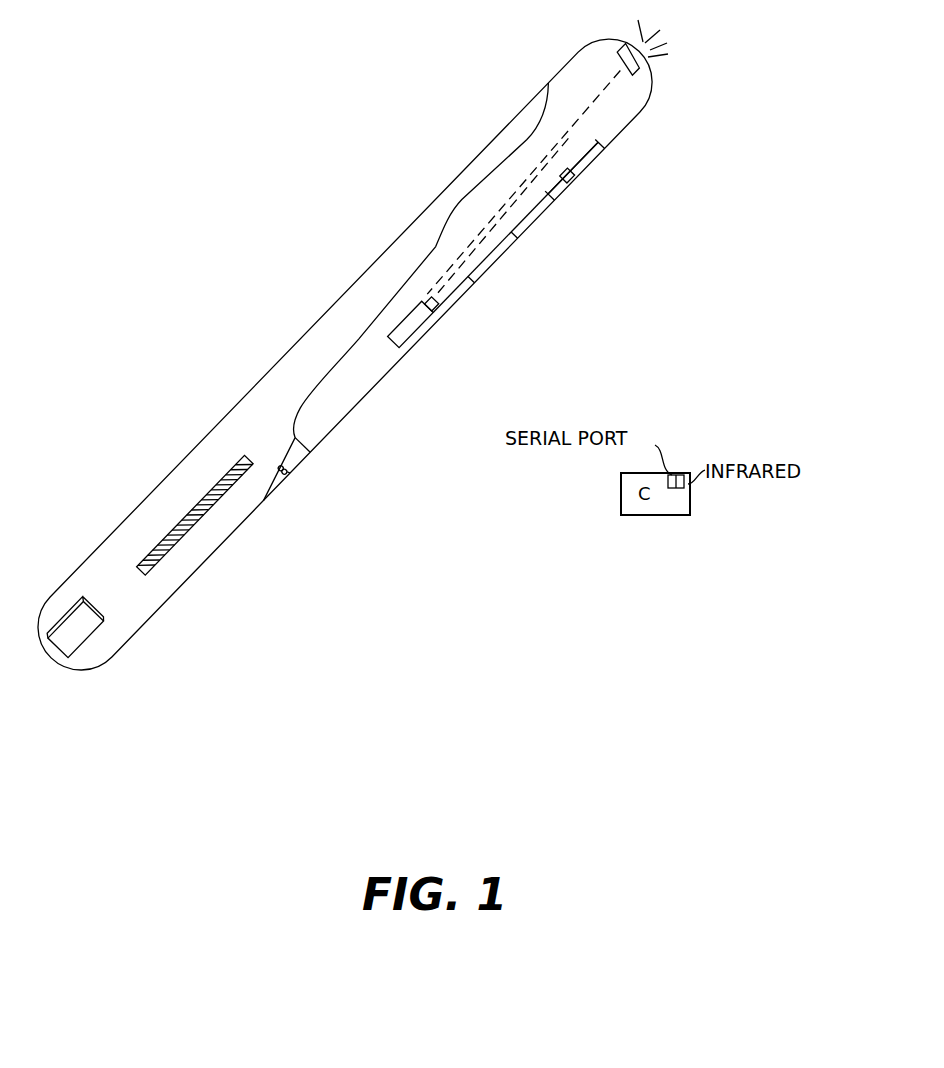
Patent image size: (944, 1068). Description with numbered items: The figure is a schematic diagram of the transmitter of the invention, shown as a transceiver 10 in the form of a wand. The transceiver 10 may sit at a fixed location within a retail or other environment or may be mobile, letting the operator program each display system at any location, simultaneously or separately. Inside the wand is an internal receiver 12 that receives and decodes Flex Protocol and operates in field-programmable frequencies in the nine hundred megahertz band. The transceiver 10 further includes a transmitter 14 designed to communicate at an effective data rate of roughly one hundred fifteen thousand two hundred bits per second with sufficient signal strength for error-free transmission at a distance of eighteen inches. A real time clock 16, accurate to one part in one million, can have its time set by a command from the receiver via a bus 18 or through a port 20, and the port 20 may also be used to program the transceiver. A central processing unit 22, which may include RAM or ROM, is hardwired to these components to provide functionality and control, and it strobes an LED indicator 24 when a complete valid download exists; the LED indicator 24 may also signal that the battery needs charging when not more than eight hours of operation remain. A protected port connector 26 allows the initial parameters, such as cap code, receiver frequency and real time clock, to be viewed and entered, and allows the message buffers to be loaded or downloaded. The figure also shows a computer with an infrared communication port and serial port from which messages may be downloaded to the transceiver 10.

The transceiver 10 is at (369, 503).
The internal receiver 12 is at (500, 255).
The transmitter 14 is at (641, 68).
The real time clock 16 is at (592, 160).
The bus 18 is at (543, 222).
The port 20 is at (573, 178).
The central processing unit 22 is at (420, 327).
The LED indicator 24 is at (217, 483).
The protected port connector 26 is at (85, 637).